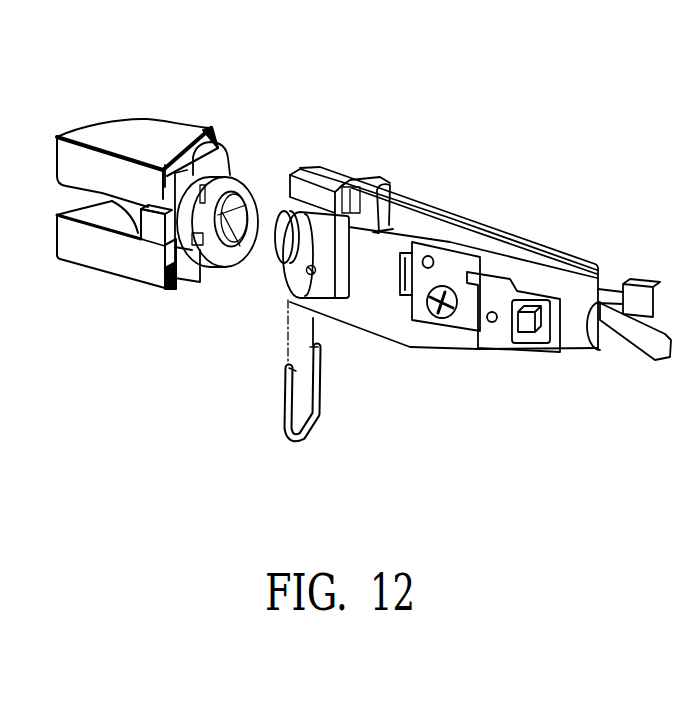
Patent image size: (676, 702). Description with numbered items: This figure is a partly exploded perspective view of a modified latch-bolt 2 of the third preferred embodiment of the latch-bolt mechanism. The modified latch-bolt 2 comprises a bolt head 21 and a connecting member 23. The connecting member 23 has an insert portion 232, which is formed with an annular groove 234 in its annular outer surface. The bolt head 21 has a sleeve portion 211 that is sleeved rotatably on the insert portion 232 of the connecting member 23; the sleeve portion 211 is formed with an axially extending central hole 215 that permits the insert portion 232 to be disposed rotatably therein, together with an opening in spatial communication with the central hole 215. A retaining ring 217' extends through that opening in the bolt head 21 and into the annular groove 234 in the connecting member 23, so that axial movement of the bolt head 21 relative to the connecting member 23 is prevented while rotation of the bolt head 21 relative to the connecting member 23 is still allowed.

The modified latch-bolt 2 is at (454, 214).
The bolt head 21 is at (122, 135).
The sleeve portion 211 is at (202, 127).
The central hole 215 is at (232, 258).
The retaining ring 217' is at (245, 414).
The connecting member 23 is at (308, 283).
The insert portion 232 is at (284, 220).
The annular groove 234 is at (284, 273).